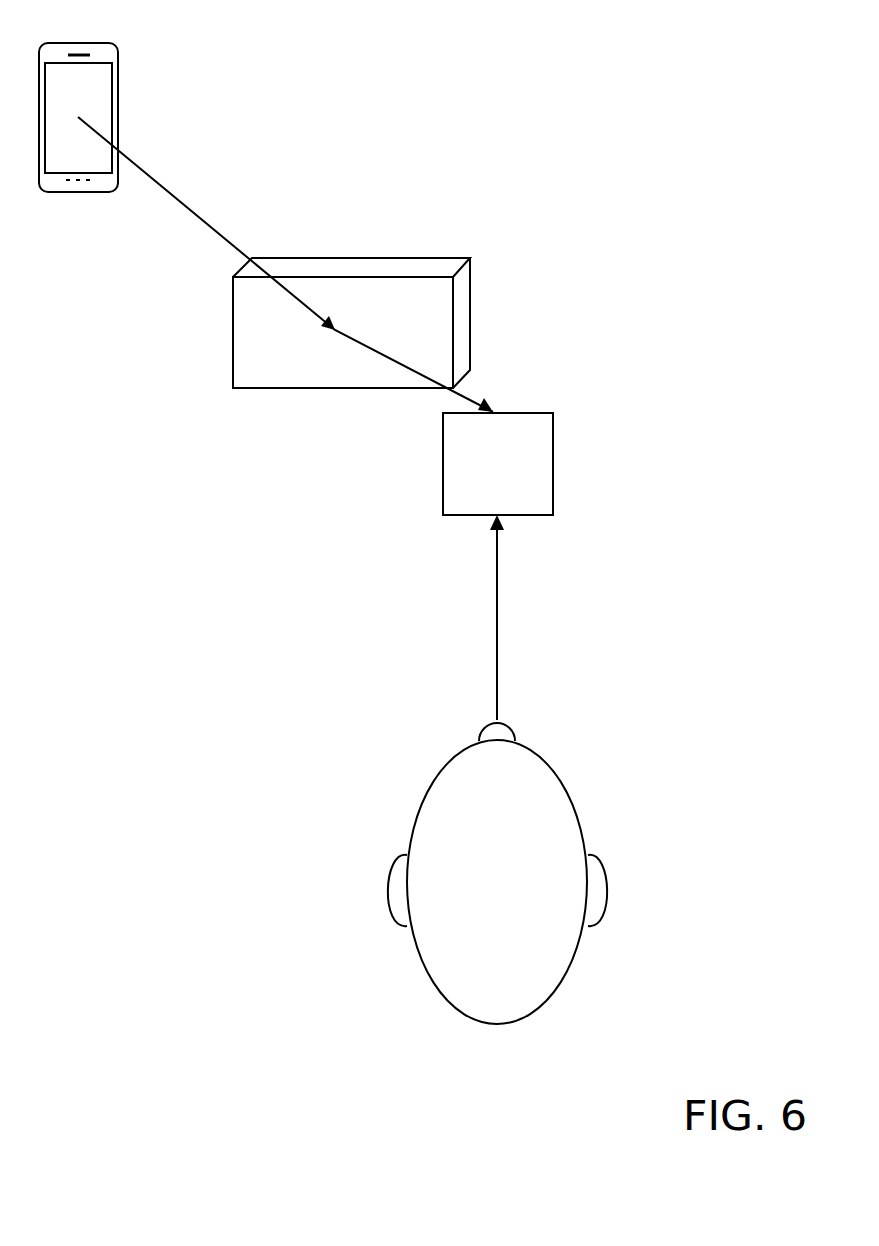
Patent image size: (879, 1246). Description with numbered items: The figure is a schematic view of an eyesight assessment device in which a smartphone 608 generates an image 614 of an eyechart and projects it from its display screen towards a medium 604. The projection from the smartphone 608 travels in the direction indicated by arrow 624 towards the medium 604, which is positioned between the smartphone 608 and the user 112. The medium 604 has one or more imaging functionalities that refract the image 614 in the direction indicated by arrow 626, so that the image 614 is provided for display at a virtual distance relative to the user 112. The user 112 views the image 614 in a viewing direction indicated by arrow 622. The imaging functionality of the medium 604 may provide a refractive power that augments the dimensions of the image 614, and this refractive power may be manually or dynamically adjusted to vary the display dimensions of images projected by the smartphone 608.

The smartphone 608 is at (118, 55).
The arrow 624 is at (185, 205).
The medium 604 is at (470, 258).
The arrow 626 is at (470, 395).
The image 614 is at (553, 465).
The arrow 622 is at (497, 655).
The user 112 is at (555, 993).